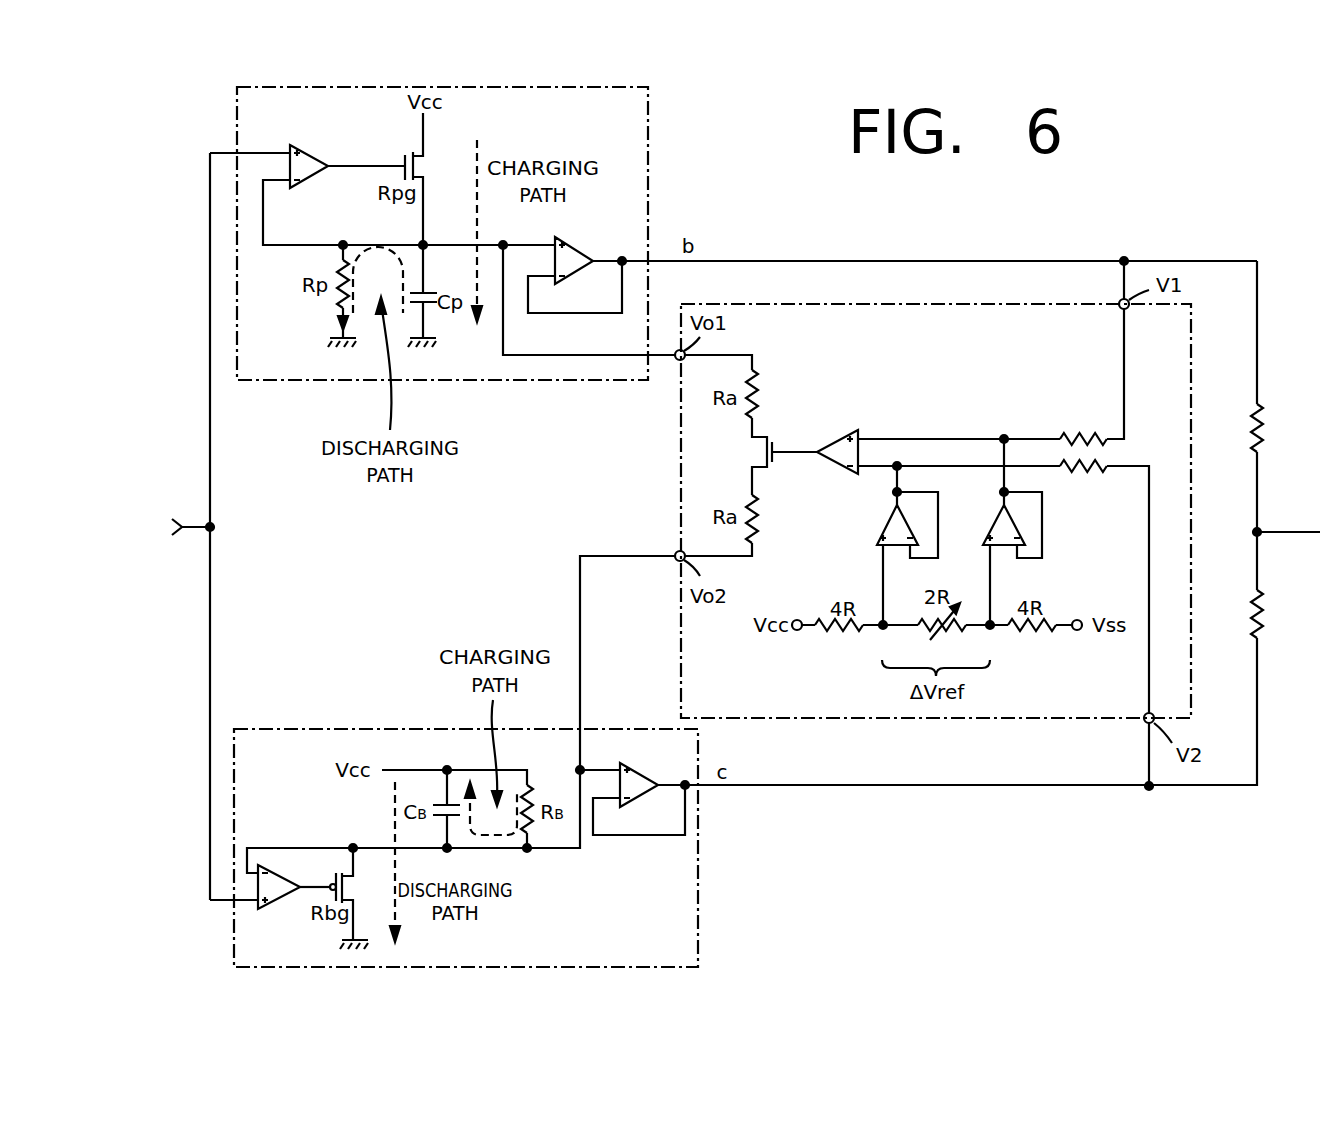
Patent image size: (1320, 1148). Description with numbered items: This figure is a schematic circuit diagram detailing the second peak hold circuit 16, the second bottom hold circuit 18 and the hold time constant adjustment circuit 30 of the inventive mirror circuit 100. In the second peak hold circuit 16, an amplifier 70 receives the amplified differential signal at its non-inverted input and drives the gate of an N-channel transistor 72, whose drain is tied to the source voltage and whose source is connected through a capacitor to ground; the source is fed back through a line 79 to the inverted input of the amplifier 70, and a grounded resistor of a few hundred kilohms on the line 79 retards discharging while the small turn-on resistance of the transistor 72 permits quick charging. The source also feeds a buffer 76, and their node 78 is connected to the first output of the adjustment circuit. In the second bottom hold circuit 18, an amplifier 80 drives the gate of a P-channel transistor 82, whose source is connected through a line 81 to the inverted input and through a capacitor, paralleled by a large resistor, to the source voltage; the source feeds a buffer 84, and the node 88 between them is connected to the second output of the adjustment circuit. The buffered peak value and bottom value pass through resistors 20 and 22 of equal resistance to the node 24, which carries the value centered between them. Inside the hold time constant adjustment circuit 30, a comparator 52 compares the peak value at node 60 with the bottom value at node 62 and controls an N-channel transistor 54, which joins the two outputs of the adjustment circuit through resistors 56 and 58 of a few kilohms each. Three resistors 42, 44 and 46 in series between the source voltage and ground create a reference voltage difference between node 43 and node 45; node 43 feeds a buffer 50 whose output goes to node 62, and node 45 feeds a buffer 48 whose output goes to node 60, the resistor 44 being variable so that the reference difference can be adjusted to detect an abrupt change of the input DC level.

The second peak hold circuit 16 is at (648, 126).
The second bottom hold circuit 18 is at (293, 728).
The resistor 20 is at (1264, 426).
The resistor 22 is at (1263, 641).
The node 24 is at (1261, 530).
The hold time constant adjustment circuit 30 is at (1193, 331).
The resistor 42 is at (835, 639).
The node 43 is at (888, 615).
The resistor 44 is at (935, 638).
The node 45 is at (995, 615).
The resistor 46 is at (1030, 640).
The buffer 48 is at (992, 525).
The buffer 50 is at (884, 527).
The comparator 52 is at (845, 432).
The N-channel MOS transistor 54 is at (750, 451).
The resistor 56 is at (760, 397).
The resistor 58 is at (762, 521).
The node 60 is at (1004, 425).
The node 62 is at (901, 463).
The amplifier 70 is at (314, 148).
The N-channel transistor 72 is at (432, 179).
The buffer 76 is at (576, 240).
The node 78 is at (506, 242).
The line 79 is at (313, 242).
The amplifier 80 is at (282, 905).
The line 81 is at (300, 845).
The P-channel MOS transistor 82 is at (357, 898).
The buffer 84 is at (645, 760).
The node 88 is at (527, 853).
The mirror circuit 100 is at (1218, 188).